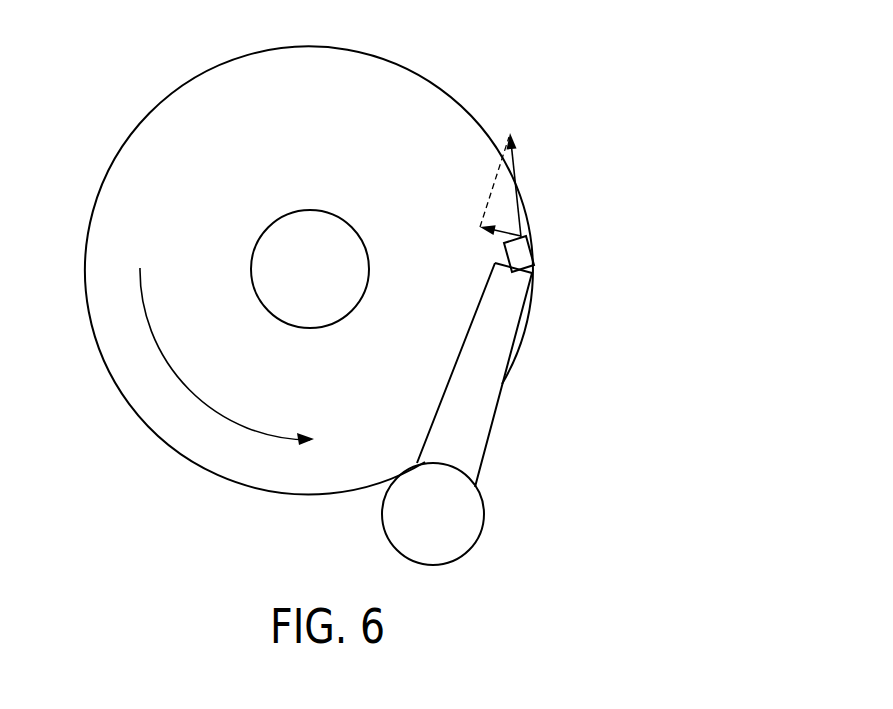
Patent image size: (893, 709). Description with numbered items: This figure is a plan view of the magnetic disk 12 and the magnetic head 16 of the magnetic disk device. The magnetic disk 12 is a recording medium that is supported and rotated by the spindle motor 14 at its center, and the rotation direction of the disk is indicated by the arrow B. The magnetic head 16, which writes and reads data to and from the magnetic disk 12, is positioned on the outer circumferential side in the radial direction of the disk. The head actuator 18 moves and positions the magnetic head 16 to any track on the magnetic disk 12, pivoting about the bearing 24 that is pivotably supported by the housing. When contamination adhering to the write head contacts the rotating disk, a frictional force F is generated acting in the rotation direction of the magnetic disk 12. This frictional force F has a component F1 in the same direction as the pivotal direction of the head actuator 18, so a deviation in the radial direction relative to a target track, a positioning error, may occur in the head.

The magnetic disk 12 is at (393, 87).
The spindle motor 14 is at (312, 228).
The magnetic head 16 is at (518, 255).
The head actuator 18 is at (546, 393).
The bearing 24 is at (467, 523).
The rotation direction of drum B is at (197, 393).
The frictional force F is at (514, 160).
The component F1 is at (510, 233).